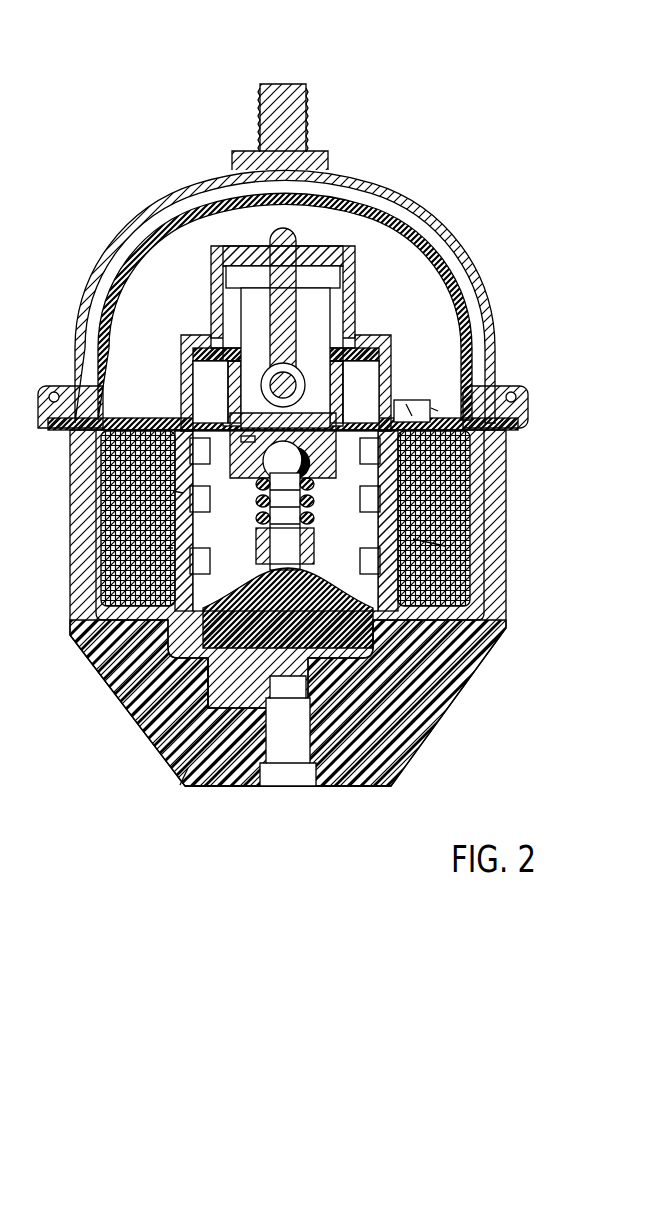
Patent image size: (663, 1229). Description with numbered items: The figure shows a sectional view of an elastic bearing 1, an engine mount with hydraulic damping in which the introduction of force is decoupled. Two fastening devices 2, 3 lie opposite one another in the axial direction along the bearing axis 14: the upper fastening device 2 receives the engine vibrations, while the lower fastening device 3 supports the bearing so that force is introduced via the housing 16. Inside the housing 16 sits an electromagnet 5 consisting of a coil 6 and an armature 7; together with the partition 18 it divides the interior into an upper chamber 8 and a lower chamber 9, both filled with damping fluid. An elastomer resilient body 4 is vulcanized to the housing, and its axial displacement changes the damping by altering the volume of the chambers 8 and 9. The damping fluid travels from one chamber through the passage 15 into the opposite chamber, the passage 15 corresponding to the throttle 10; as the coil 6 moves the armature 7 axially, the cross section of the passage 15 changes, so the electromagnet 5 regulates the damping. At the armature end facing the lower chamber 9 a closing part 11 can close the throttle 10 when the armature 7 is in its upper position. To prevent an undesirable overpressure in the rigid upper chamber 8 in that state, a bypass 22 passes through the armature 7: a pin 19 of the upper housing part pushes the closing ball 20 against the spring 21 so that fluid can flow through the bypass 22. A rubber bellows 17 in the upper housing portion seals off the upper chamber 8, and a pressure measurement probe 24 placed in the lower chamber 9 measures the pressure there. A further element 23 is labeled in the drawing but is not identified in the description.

The elastic bearing 1 is at (426, 157).
The fastening device 2 is at (273, 70).
The fastening device 3 is at (285, 792).
The elastomer resilient body 4 is at (112, 685).
The electromagnet 5 is at (133, 416).
The coil 6 is at (450, 502).
The armature 7 is at (398, 396).
The upper chamber 8 is at (405, 266).
The lower chamber 9 is at (355, 600).
The throttle 10 is at (392, 390).
The closing part 11 is at (175, 485).
The bearing axis 14 is at (343, 265).
The passage 15 is at (452, 468).
The housing 16 is at (520, 398).
The rubber bellows 17 is at (147, 233).
The partition 18 is at (150, 698).
The pin 19 is at (277, 282).
The closing ball 20 is at (437, 538).
The spring 21 is at (165, 540).
The bypass 22 is at (233, 434).
The seal ring 23 is at (353, 340).
The pressure measurement probe 24 is at (423, 400).